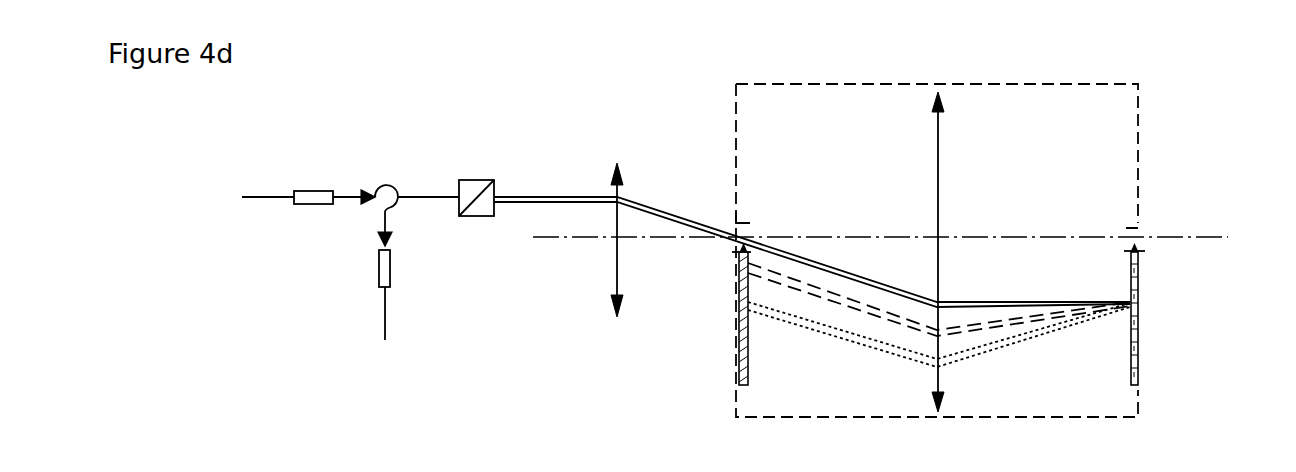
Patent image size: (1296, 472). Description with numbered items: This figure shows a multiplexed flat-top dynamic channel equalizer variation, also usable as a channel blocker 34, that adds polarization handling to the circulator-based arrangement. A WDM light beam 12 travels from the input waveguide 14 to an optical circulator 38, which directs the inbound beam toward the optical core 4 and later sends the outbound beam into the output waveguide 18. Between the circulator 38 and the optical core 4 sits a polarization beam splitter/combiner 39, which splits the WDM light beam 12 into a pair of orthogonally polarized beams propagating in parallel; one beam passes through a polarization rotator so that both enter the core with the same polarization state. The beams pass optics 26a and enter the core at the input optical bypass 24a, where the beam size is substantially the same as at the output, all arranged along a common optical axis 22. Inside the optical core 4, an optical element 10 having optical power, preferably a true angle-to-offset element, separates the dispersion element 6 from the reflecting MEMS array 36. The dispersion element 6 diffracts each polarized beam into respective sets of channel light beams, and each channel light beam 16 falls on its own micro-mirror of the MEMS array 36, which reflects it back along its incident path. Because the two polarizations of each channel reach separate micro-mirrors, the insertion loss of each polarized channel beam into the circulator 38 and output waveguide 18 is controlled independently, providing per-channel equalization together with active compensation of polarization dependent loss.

The channel blocker 34 is at (1200, 72).
The input waveguide 14 is at (283, 197).
The optical circulator 38 is at (379, 186).
The output waveguide 18 is at (383, 310).
The polarization beam splitter/combiner 39 is at (477, 182).
The WDM light beam 12 is at (591, 197).
The optics 26a is at (615, 258).
The optical core 4 is at (735, 105).
The input optical bypass 24a is at (733, 225).
The optical element 10 is at (937, 142).
The optical axis 22 is at (1210, 238).
The MEMS array 36 is at (739, 364).
The channel light beam 16 is at (997, 327).
The dispersion element 6 is at (1140, 343).